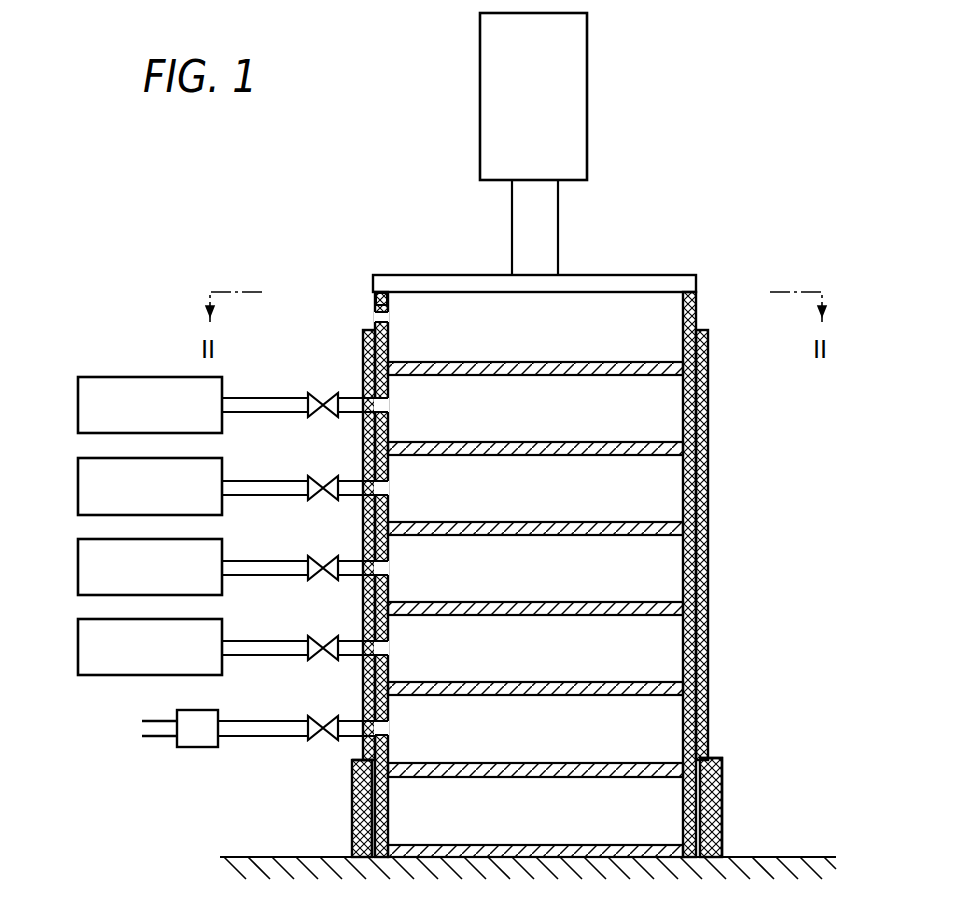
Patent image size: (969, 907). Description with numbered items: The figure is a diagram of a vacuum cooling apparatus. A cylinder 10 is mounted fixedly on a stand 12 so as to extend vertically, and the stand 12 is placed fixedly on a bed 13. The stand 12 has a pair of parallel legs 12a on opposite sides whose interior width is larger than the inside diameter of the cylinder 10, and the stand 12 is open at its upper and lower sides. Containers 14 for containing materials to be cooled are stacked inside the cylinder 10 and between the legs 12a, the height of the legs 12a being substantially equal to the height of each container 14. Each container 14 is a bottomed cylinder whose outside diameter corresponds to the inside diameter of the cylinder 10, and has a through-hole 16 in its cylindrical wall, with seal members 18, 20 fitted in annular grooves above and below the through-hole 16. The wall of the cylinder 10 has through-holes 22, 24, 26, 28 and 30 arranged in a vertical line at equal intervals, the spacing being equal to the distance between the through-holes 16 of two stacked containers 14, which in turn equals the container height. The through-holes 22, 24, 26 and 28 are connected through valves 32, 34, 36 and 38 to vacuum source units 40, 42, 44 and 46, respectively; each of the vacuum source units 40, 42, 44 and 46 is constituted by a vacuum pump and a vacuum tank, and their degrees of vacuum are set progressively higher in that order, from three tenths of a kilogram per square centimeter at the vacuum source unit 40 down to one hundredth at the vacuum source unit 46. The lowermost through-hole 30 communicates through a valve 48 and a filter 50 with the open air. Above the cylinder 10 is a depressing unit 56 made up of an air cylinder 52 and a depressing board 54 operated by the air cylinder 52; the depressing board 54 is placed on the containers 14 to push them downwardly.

The cylinder 10 is at (708, 436).
The stand 12 is at (726, 768).
The legs 12a is at (360, 815).
The bed 13 is at (238, 856).
The containers 14 is at (697, 328).
The through-hole 16 is at (388, 404).
The seal member 18 is at (377, 298).
The seal member 20 is at (366, 340).
The through-hole 22 is at (352, 413).
The through-hole 24 is at (352, 496).
The through-hole 26 is at (352, 576).
The through-hole 28 is at (352, 656).
The through-hole 30 is at (352, 738).
The valve 32 is at (318, 392).
The valve 34 is at (318, 475).
The valve 36 is at (318, 556).
The valve 38 is at (318, 636).
The vacuum source unit 40 is at (78, 383).
The vacuum source unit 42 is at (78, 464).
The vacuum source unit 44 is at (78, 545).
The vacuum source unit 46 is at (78, 629).
The valve 48 is at (318, 716).
The filter 50 is at (193, 747).
The air cylinder 52 is at (588, 64).
The depressing board 54 is at (670, 275).
The depressing unit 56 is at (460, 176).